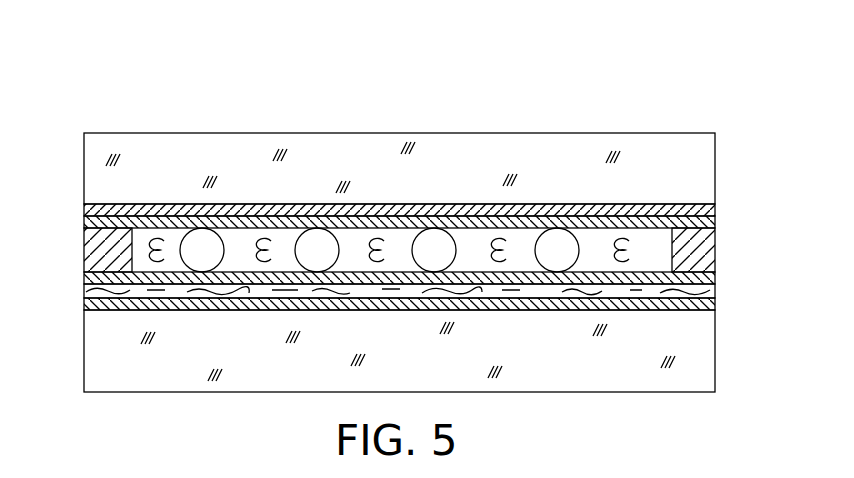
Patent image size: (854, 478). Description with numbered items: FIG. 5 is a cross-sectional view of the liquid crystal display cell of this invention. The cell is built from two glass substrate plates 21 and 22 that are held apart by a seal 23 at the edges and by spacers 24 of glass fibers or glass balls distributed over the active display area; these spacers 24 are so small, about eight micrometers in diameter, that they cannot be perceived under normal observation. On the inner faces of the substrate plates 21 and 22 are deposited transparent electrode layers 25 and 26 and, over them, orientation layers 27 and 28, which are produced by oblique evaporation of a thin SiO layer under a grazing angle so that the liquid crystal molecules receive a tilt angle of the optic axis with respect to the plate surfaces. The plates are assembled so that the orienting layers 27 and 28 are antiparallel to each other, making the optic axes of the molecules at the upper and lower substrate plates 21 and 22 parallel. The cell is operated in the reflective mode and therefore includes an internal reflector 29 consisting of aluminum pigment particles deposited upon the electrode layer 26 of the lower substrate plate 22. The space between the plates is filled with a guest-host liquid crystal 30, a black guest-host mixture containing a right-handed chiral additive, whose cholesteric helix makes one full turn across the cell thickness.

The glass substrate plate 21 is at (692, 143).
The glass substrate plate 22 is at (702, 367).
The seal 23 is at (98, 252).
The spacers 24 is at (555, 256).
The transparent electrode layer 25 is at (668, 203).
The transparent electrode layer 26 is at (714, 312).
The orientation layer 27 is at (716, 215).
The orientation layer 28 is at (710, 280).
The internal reflector 29 is at (713, 292).
The guest-host liquid crystal 30 is at (163, 236).